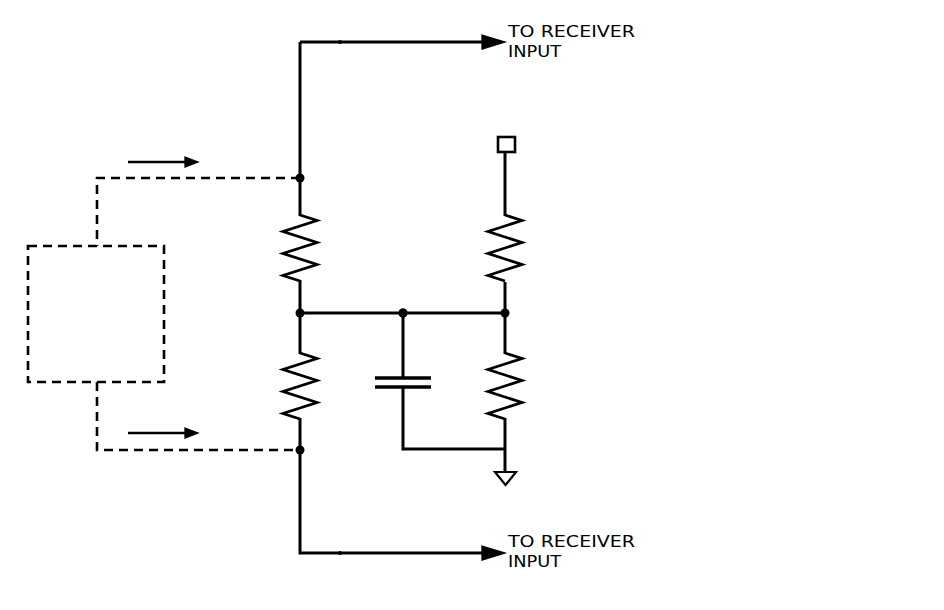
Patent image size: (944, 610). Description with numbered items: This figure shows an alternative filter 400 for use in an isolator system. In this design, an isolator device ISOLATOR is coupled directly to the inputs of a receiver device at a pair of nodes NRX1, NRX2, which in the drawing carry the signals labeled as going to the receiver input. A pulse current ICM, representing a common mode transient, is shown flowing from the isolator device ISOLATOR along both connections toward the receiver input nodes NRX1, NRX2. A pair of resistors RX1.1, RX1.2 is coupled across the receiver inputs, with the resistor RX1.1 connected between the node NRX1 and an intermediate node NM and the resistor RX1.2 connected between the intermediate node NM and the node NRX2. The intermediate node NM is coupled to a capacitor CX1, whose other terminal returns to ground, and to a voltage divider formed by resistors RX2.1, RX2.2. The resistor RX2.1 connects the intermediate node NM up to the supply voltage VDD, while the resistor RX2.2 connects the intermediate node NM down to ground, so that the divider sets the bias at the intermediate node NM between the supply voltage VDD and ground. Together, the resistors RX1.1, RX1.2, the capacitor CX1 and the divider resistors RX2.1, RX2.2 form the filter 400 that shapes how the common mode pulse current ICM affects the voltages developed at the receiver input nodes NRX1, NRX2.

The filter 400 is at (661, 339).
The resistor RX1.1 is at (273, 248).
The resistor RX1.2 is at (273, 386).
The resistor RX2.1 is at (531, 248).
The resistor RX2.2 is at (531, 386).
The capacitor CX1 is at (410, 402).
The receiver input node NRX1 is at (402, 44).
The receiver input node NRX2 is at (400, 551).
The intermediate node NM is at (402, 309).
The supply voltage VDD is at (503, 130).
The pulse current ICM is at (163, 288).
The isolator device ISOLATOR is at (96, 314).